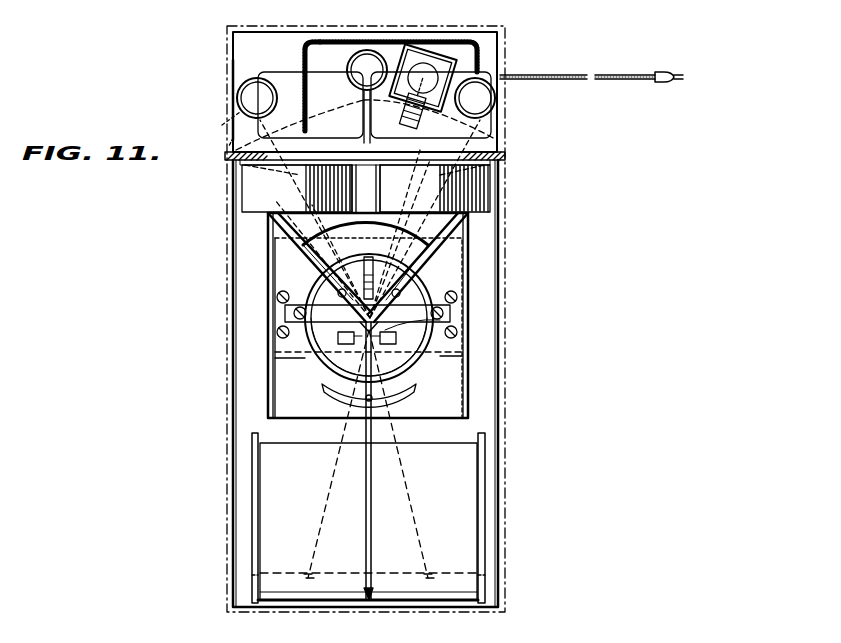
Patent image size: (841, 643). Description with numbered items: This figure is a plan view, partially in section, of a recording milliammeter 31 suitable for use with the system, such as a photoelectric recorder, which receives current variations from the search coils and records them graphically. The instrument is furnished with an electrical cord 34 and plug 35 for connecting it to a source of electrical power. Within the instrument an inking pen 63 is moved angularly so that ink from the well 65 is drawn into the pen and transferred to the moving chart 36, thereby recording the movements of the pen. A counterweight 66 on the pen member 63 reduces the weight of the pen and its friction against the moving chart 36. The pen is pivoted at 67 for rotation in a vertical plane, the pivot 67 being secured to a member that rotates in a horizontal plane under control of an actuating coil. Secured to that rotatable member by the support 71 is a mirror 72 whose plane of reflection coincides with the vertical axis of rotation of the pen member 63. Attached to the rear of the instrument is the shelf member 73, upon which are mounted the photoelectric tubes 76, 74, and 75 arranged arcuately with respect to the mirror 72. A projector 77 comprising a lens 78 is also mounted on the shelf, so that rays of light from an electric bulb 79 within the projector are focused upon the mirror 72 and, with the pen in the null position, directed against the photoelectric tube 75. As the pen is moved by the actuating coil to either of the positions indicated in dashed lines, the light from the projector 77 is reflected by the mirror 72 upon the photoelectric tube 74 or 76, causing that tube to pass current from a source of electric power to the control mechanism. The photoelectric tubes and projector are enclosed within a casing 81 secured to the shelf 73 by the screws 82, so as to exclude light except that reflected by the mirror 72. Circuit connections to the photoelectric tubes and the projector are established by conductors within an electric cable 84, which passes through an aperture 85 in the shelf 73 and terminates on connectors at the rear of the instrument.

The recording milliammeter 31 is at (499, 304).
The power cord 34 is at (590, 74).
The electrical cord and plug 35 is at (659, 88).
The moving chart 36 is at (308, 604).
The pen 63 is at (370, 610).
The ink well 65 is at (422, 384).
The counterweight 66 is at (426, 272).
The pivot 67 is at (300, 352).
The support 71 is at (417, 360).
The mirror 72 is at (424, 340).
The shelf member 73 is at (499, 130).
The photoelectric tube 74 is at (237, 95).
The photoelectric tube 75 is at (352, 78).
The photoelectric tube 76 is at (486, 86).
The projector 77 is at (440, 48).
The lens 78 is at (405, 110).
The electric bulb 79 is at (452, 72).
The casing 81 is at (231, 110).
The screws 82 is at (224, 130).
The electric cable 84 is at (301, 52).
The aperture 85 is at (310, 136).